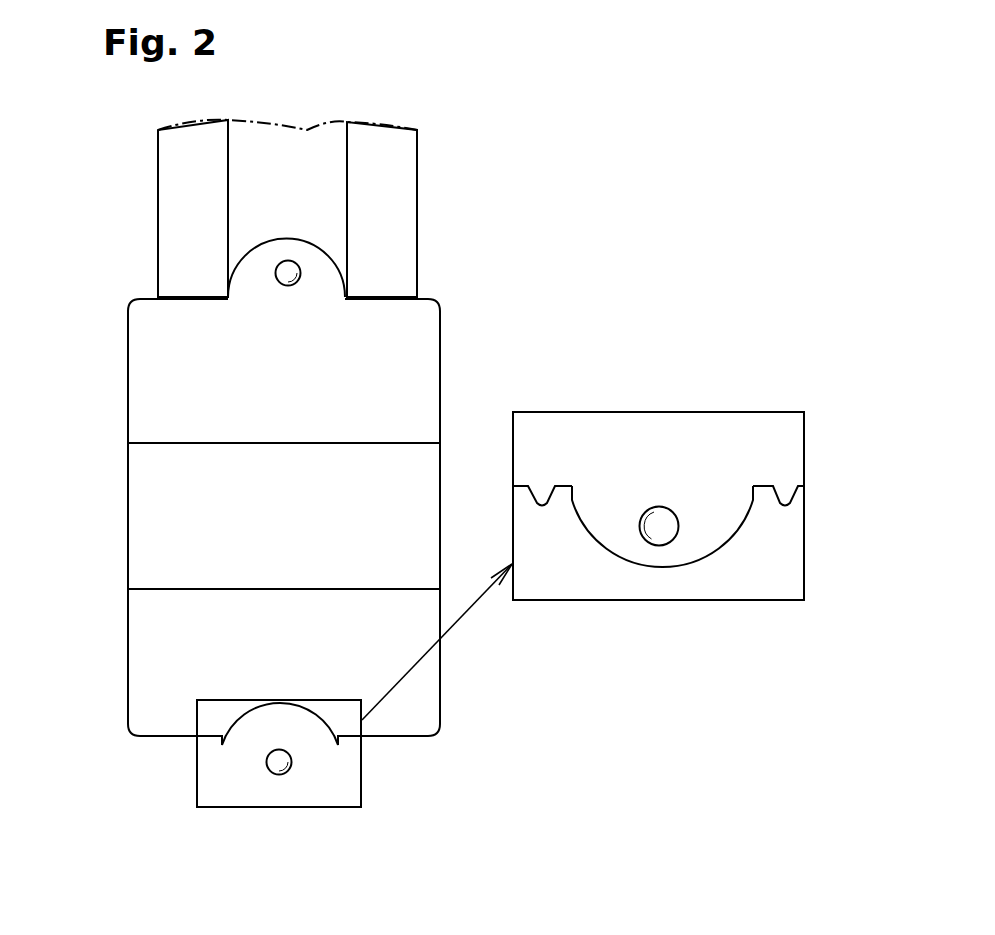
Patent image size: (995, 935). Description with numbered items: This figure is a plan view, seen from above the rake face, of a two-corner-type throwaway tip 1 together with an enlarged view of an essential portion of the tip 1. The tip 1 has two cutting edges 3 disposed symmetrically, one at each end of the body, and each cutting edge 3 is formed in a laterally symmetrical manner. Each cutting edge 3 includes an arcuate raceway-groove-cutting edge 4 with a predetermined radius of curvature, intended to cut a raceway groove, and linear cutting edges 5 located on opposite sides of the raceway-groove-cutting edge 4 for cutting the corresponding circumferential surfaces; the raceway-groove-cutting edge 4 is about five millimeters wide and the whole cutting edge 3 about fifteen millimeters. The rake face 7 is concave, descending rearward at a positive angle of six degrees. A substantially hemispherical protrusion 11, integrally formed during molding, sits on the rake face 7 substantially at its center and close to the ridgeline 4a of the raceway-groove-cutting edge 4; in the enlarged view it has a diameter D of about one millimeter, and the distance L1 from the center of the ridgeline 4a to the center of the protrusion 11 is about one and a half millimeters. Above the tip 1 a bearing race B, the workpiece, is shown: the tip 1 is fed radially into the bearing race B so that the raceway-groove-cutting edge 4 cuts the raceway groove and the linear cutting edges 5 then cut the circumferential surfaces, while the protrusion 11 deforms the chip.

The tip 1 is at (127, 305).
The bearing race B is at (158, 166).
The cutting edge 3 is at (478, 188).
The raceway-groove-cutting edge 4 is at (320, 253).
The ridgeline 4a is at (597, 541).
The linear cutting edges 5 is at (200, 297).
The rake face 7 is at (392, 378).
The protrusion 11 is at (288, 261).
The diameter D is at (612, 580).
The distance L1 is at (678, 526).